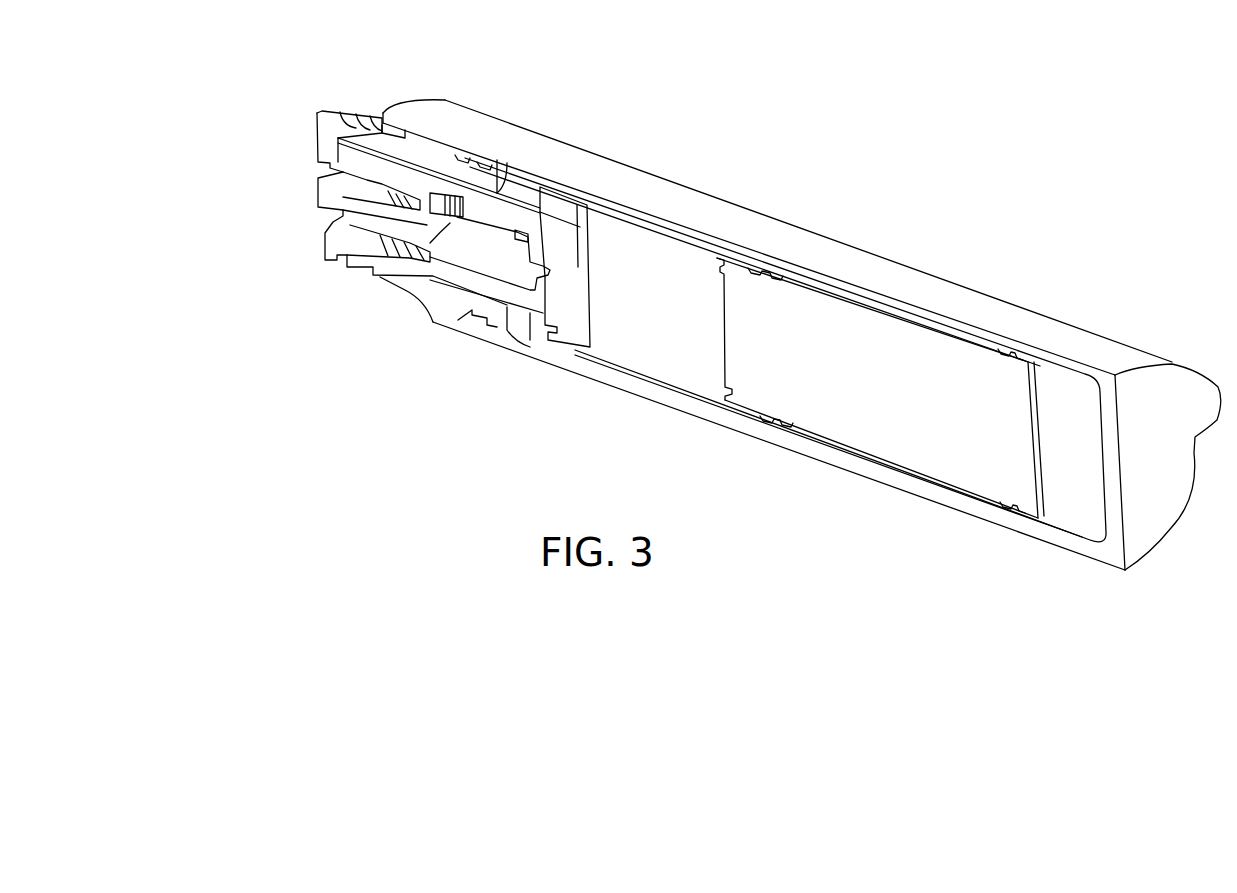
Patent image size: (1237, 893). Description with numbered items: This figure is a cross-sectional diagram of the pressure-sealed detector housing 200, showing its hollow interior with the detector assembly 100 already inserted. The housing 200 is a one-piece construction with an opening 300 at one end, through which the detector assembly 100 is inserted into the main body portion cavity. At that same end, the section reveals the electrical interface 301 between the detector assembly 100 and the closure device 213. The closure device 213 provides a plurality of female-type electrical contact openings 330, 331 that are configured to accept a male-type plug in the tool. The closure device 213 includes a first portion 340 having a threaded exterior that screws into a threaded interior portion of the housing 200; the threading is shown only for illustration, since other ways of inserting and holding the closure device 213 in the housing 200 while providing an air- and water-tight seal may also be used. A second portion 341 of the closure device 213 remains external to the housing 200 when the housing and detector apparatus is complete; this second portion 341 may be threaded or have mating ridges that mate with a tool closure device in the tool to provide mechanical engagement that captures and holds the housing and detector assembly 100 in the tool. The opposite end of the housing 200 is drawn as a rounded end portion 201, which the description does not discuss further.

The detector assembly 100 is at (878, 342).
The pressure-sealed detector housing 200 is at (816, 158).
The bulged end portion 201 is at (1226, 398).
The closure device 213 is at (350, 110).
The opening 300 is at (306, 213).
The electrical interface 301 is at (500, 262).
The female-type electrical contact opening 330 is at (363, 180).
The female-type electrical contact opening 331 is at (360, 233).
The first portion 340 is at (468, 160).
The second portion 341 is at (393, 272).